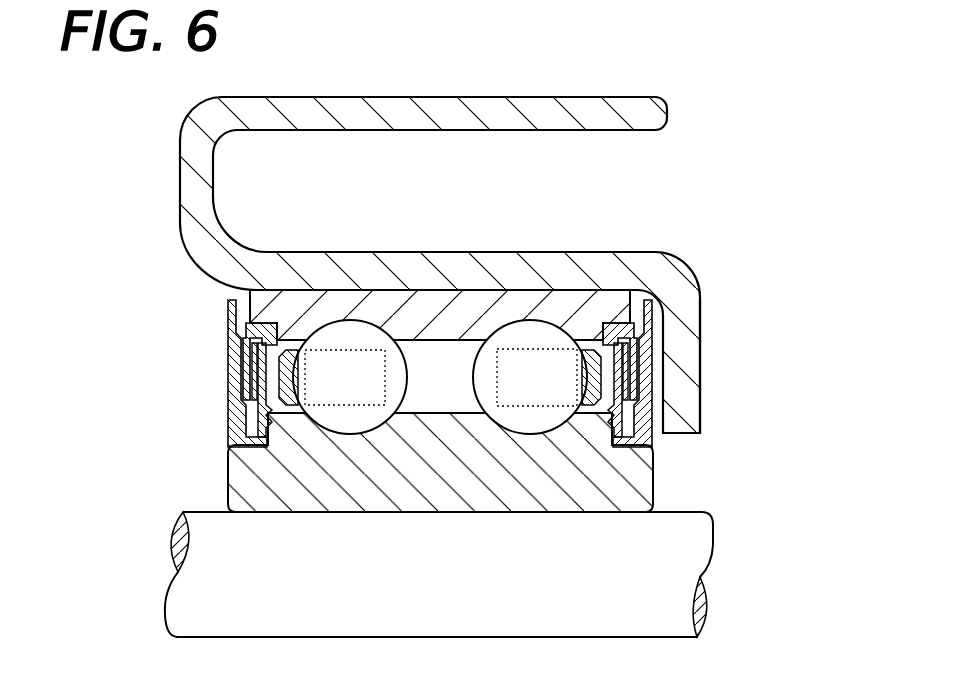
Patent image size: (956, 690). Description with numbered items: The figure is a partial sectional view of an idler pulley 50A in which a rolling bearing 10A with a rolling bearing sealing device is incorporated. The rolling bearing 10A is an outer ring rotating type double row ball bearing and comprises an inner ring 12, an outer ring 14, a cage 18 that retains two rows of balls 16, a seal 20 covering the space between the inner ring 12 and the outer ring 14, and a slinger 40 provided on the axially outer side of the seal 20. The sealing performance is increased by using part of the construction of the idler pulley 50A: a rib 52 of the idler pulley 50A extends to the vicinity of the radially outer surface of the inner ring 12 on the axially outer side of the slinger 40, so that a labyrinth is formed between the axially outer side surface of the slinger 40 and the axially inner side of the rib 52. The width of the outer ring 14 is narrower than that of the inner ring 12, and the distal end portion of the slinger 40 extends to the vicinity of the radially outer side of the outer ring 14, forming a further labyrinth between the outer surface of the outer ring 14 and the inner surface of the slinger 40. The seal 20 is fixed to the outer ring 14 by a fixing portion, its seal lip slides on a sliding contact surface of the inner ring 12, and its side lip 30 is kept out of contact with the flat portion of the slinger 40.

The idler pulley 50A is at (344, 94).
The rib 52 is at (683, 394).
The inner ring 12 is at (240, 462).
The balls 16 is at (350, 425).
The cage 18 is at (284, 402).
The rolling bearing 10A is at (221, 397).
The outer ring 14 is at (227, 306).
The seal 20 is at (236, 334).
The side lip 30 is at (252, 358).
The slinger 40 is at (258, 376).